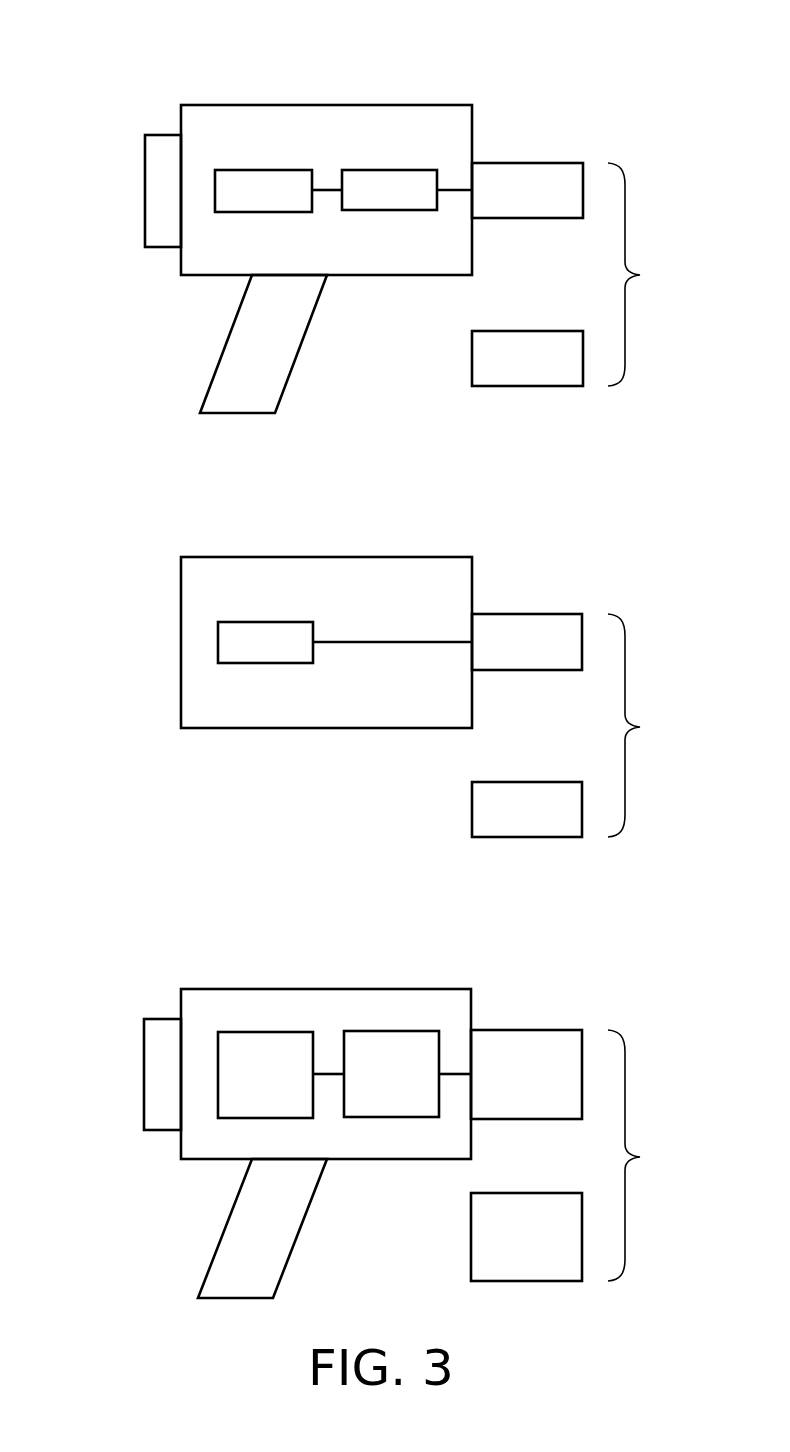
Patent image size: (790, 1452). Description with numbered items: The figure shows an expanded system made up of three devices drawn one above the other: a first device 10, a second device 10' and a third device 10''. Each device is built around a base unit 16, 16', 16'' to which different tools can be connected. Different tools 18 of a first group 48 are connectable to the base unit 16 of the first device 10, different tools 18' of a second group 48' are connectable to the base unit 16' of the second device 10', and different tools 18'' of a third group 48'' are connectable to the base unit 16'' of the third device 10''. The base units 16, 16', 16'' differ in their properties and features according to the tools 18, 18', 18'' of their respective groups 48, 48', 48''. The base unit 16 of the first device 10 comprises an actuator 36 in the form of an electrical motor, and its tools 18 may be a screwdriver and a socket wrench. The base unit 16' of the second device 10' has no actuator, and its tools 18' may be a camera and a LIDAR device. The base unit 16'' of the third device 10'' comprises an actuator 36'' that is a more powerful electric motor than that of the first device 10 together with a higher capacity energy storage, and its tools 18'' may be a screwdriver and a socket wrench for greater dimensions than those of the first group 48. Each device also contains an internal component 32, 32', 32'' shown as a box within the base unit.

The first device 10 is at (308, 144).
The base unit 16 is at (310, 344).
The tools 18 is at (527, 274).
The controller 32 is at (188, 174).
The actuator 36 is at (390, 129).
The first group 48 is at (647, 274).
The second device 10' is at (320, 596).
The base unit 16' is at (395, 767).
The tools 18' is at (527, 725).
The controller (variant) 32' is at (188, 625).
The second group 48' is at (648, 725).
The third device 10'' is at (307, 1027).
The base unit 16'' is at (315, 1228).
The tools 18'' is at (528, 1157).
The controller (second variant) 32'' is at (185, 1068).
The actuator 36'' is at (397, 1024).
The third group 48'' is at (653, 1155).